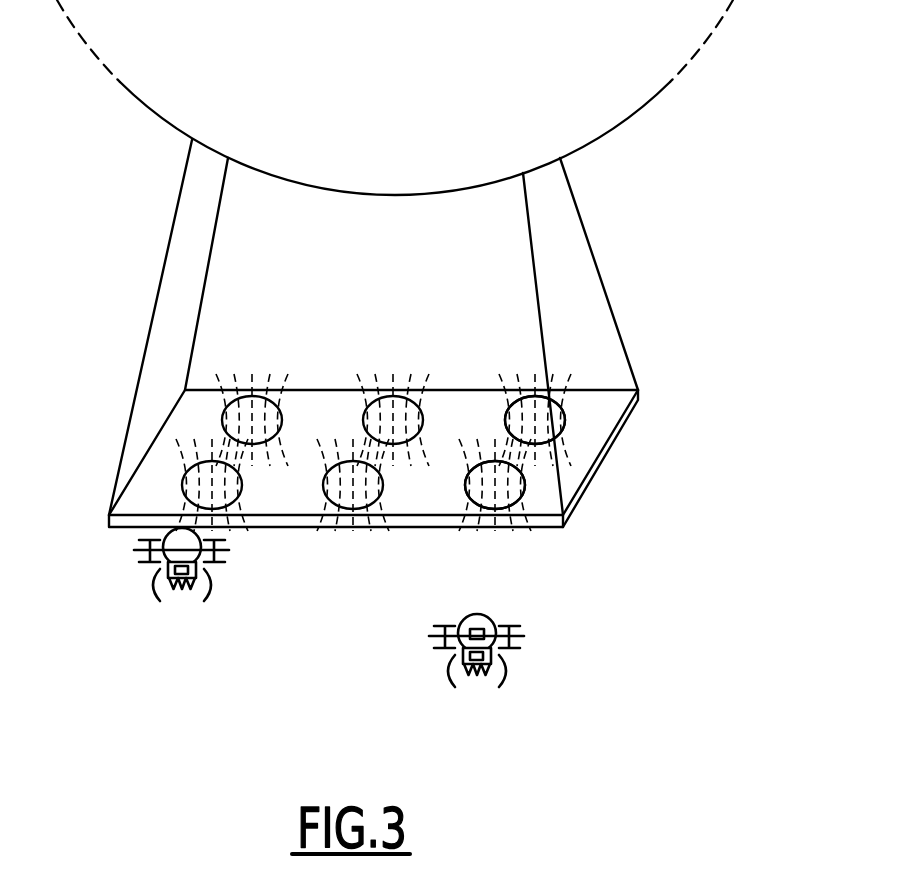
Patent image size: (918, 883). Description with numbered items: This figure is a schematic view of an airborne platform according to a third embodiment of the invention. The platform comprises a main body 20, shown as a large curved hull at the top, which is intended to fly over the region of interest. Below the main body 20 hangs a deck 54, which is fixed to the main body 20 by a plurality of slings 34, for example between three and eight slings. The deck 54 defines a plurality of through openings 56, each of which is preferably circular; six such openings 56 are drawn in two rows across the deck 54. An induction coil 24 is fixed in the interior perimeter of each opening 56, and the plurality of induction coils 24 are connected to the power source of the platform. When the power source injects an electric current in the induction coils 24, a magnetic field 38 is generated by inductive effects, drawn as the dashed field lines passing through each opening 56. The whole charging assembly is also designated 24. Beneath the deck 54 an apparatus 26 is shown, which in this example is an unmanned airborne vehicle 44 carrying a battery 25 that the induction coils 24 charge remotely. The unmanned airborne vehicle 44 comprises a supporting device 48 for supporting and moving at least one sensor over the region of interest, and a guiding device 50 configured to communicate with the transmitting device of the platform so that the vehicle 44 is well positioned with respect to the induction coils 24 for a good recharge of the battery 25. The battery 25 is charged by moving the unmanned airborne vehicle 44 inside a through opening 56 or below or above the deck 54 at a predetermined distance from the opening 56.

The main body 20 is at (575, 105).
The slings 34 is at (213, 228).
The deck 54 is at (590, 405).
The induction coil 24 is at (410, 385).
The magnetic field 38 is at (373, 383).
The through openings 56 is at (495, 487).
The apparatus 26 is at (470, 623).
The unmanned airborne vehicle 44 is at (485, 618).
The battery 25 is at (482, 632).
The supporting device 48 is at (458, 652).
The guiding device 50 is at (497, 652).